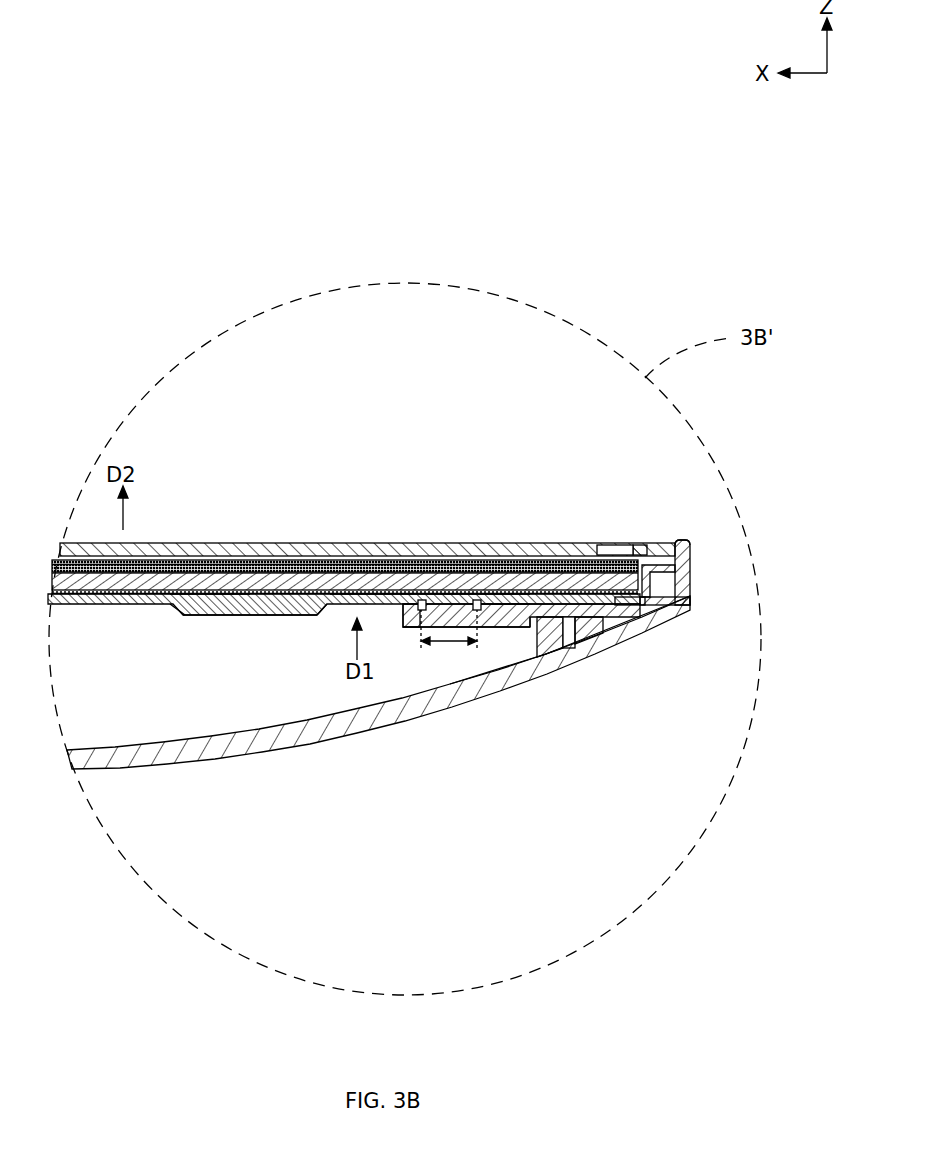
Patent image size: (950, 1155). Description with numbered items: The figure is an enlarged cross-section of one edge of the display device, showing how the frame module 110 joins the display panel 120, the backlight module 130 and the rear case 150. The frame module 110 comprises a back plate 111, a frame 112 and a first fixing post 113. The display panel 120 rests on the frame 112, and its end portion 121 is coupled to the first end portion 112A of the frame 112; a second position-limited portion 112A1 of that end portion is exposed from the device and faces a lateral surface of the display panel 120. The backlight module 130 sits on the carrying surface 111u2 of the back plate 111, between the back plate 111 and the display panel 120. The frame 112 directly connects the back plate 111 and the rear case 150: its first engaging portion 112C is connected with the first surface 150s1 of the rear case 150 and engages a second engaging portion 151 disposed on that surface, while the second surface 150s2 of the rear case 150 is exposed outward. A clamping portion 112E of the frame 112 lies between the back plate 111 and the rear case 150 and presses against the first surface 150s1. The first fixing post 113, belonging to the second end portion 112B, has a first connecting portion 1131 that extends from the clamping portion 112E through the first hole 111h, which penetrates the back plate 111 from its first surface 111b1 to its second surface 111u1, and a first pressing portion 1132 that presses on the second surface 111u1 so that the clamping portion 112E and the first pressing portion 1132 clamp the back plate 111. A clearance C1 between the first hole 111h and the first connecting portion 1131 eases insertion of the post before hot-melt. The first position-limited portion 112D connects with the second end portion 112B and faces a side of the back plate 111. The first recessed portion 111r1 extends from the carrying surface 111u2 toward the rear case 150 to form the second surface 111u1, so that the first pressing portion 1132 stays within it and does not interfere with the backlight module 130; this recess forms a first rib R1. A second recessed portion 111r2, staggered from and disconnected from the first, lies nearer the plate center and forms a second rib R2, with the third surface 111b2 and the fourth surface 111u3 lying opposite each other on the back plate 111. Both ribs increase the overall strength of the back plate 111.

The frame module 110 is at (455, 594).
The back plate 111 is at (429, 612).
The first surface 111b1 is at (415, 624).
The third surface 111b2 is at (247, 617).
The first hole 111h is at (449, 637).
The first recessed portion 111r1 is at (478, 597).
The second recessed portion 111r2 is at (292, 603).
The second surface 111u1 is at (397, 600).
The carrying surface 111u2 is at (365, 600).
The fourth surface 111u3 is at (220, 600).
The frame 112 is at (615, 594).
The first end portion 112A is at (660, 548).
The second position-limited portion 112A1 is at (692, 547).
The second end portion 112B is at (538, 562).
The first engaging portion 112C is at (538, 626).
The first position-limited portion 112D is at (624, 550).
The clamping portion 112E is at (411, 628).
The first fixing post 113 is at (467, 537).
The first connecting portion 1131 is at (445, 600).
The first pressing portion 1132 is at (500, 598).
The display panel 120 is at (578, 550).
The end portion 121 is at (651, 543).
The backlight module 130 is at (50, 560).
The rear case 150 is at (389, 701).
The first surface 150s1 is at (598, 606).
The second surface 150s2 is at (573, 663).
The second engaging portion 151 is at (573, 652).
The clearance C1 is at (500, 612).
The first rib R1 is at (527, 622).
The second rib R2 is at (297, 617).